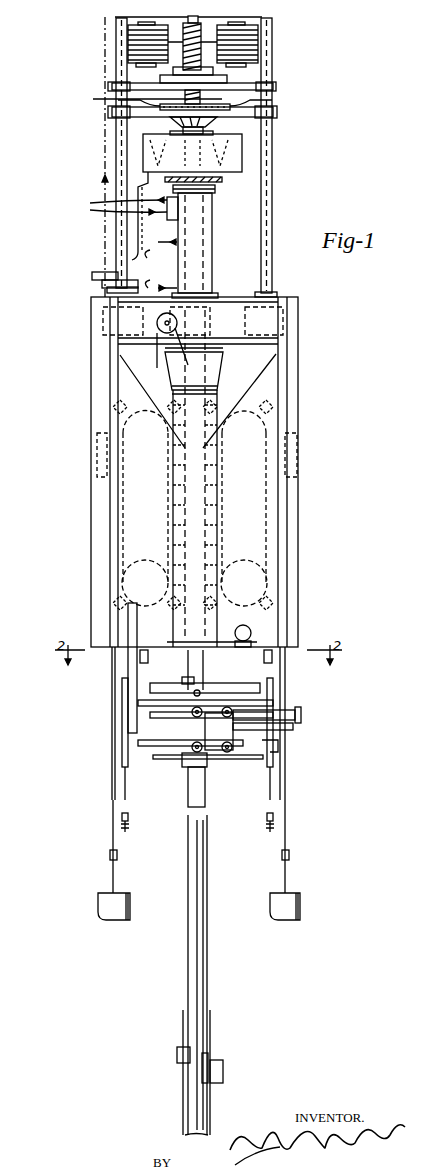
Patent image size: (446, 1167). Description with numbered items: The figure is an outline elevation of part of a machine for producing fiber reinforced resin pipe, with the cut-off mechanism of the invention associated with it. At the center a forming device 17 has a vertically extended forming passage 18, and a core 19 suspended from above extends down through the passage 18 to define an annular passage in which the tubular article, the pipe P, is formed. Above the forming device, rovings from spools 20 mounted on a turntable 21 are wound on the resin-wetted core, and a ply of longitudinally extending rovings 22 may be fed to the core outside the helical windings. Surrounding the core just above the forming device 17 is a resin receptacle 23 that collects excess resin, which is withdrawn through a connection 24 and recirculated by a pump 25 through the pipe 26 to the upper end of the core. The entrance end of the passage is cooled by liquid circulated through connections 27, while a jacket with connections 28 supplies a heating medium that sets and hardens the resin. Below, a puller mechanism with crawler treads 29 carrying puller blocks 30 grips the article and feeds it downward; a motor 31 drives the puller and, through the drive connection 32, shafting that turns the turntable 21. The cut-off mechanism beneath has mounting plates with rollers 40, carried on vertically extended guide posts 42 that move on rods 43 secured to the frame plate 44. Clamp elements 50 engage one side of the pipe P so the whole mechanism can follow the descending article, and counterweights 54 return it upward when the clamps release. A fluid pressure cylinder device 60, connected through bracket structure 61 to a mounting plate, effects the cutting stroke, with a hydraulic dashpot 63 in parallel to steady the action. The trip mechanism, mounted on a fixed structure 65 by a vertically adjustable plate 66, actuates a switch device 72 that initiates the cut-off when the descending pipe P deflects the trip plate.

The forming device 17 is at (213, 273).
The forming passage 18 is at (205, 228).
The core 19 is at (118, 18).
The spools 20 is at (130, 50).
The turntable 21 is at (230, 76).
The longitudinally extending rovings 22 is at (278, 104).
The resin receptacle 23 is at (240, 166).
The connection 24 is at (138, 240).
The pump 25 is at (90, 277).
The pipe 26 is at (100, 148).
The connections 27 is at (120, 208).
The connections 28 is at (157, 265).
The crawler treads 29 is at (130, 475).
The puller blocks 30 is at (96, 440).
The motor 31 is at (252, 633).
The drive connection 32 is at (150, 352).
The rollers 40 is at (222, 765).
The guide posts 42 is at (120, 762).
The rods 43 is at (128, 790).
The frame plate 44 is at (174, 672).
The clamp elements 50 is at (185, 770).
The counterweights 54 is at (116, 917).
The fluid pressure cylinder device 60 is at (285, 712).
The bracket structure 61 is at (145, 735).
The hydraulic dashpot 63 is at (280, 742).
The fixed structure 65 is at (183, 1112).
The vertically adjustable plate 66 is at (180, 1079).
The switch device 72 is at (225, 1075).
The pipe P is at (222, 672).